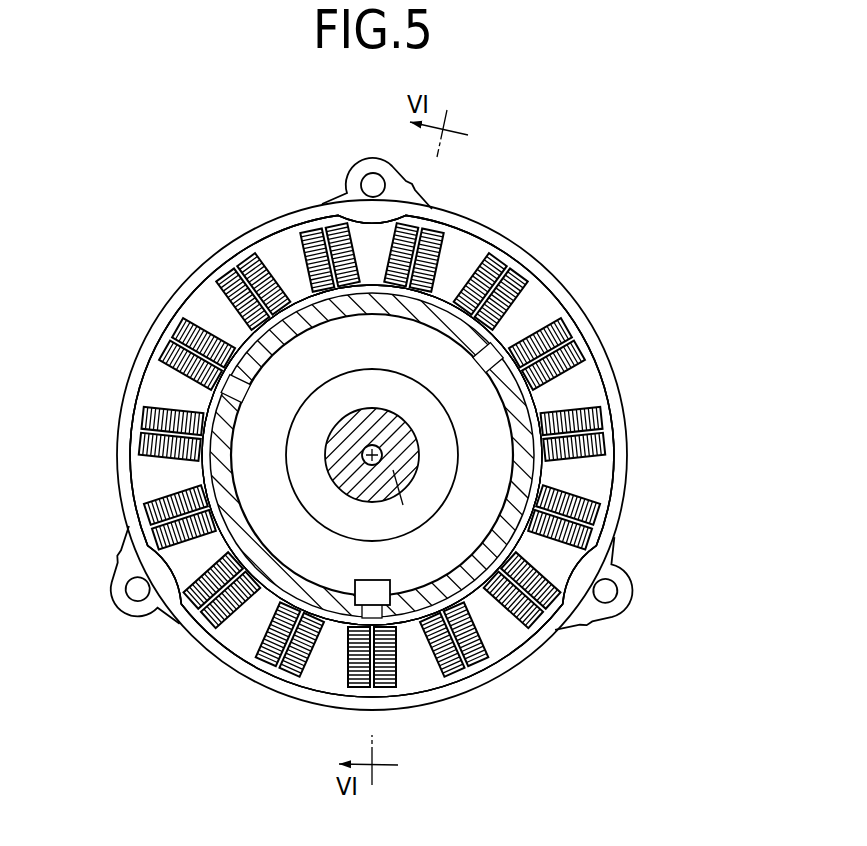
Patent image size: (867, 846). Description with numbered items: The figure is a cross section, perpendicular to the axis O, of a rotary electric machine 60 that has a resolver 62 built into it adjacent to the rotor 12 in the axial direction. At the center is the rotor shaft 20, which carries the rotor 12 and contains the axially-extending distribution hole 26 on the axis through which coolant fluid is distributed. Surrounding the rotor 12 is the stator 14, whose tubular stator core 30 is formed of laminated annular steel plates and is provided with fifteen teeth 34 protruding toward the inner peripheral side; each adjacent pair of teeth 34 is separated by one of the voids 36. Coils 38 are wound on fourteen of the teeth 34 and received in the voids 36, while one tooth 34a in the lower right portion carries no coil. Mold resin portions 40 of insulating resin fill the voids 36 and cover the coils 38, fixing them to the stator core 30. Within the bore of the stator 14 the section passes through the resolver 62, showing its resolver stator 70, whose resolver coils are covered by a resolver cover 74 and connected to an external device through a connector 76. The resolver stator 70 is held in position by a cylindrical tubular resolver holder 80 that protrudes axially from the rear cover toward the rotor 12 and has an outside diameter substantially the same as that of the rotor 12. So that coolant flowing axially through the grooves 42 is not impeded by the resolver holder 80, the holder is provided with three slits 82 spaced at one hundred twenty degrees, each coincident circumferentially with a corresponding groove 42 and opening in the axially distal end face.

The rotor 12 is at (480, 598).
The stator 14 is at (236, 238).
The rotor shaft 20 is at (348, 475).
The axially-extending distribution hole 26 is at (372, 438).
The stator core 30 is at (558, 606).
The teeth 34 is at (222, 318).
The tooth 34a is at (593, 563).
The voids 36 is at (500, 300).
The coils 38 is at (323, 256).
The mold resin portions 40 is at (425, 228).
The grooves 42 is at (212, 406).
The rotary electric machine 60 is at (546, 182).
The resolver 62 is at (482, 350).
The resolver stator 70 is at (334, 363).
The resolver cover 74 is at (376, 382).
The connector 76 is at (380, 585).
The resolver holder 80 is at (498, 540).
The slits 82 is at (243, 388).